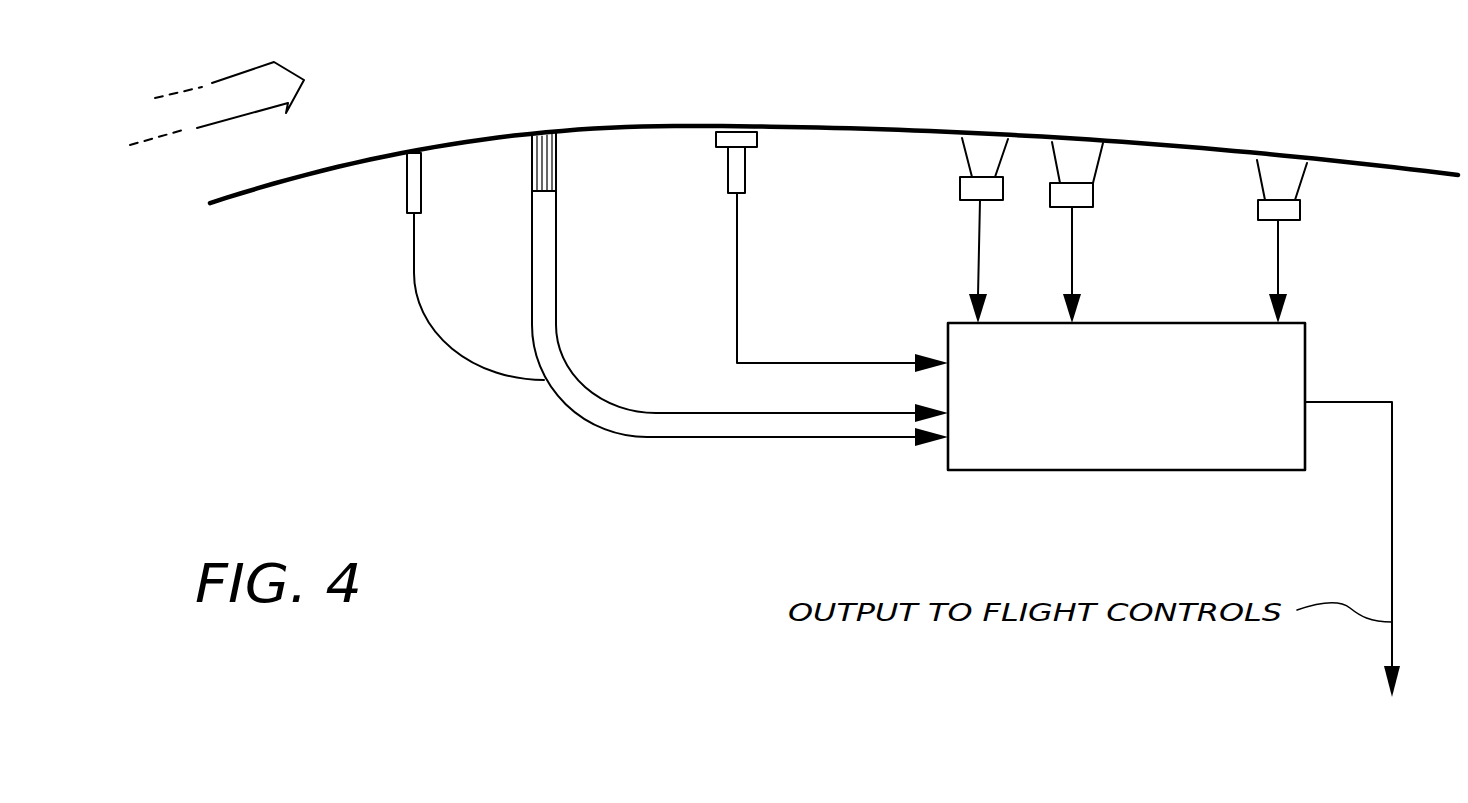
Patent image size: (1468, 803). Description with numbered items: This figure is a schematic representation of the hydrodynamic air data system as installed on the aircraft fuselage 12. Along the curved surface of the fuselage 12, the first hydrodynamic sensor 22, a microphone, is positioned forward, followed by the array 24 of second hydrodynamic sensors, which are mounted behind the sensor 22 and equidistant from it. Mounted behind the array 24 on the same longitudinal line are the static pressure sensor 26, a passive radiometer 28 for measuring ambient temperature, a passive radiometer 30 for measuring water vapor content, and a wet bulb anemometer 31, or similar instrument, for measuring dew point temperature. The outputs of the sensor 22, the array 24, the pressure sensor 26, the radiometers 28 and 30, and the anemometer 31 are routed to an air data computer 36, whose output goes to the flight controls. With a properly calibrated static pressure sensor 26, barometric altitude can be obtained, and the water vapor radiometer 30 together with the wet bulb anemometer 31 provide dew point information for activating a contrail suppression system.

The fuselage 12 is at (1127, 128).
The first hydrodynamic sensor 22 is at (417, 152).
The array of second hydrodynamic sensors 24 is at (545, 133).
The static pressure sensor 26 is at (735, 127).
The passive radiometer 28 is at (985, 137).
The passive radiometer 30 is at (1077, 140).
The wet bulb anemometer 31 is at (1277, 158).
The air data computer 36 is at (1308, 342).